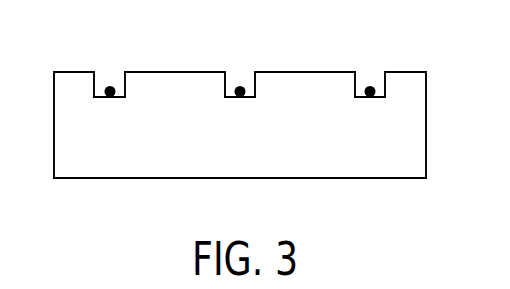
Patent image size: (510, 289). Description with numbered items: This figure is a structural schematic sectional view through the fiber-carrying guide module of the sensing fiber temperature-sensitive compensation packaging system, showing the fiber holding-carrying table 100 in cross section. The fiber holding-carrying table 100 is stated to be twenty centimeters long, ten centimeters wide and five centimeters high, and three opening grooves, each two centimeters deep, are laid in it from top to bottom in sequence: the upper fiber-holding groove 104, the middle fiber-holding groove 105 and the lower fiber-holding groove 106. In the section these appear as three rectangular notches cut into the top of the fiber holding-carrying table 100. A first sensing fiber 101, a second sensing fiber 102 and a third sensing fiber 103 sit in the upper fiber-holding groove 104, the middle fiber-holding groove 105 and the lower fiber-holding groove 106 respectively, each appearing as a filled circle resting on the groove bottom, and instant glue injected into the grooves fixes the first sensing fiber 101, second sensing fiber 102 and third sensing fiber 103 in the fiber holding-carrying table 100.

The fiber holding-carrying table 100 is at (157, 179).
The first sensing fiber 101 is at (107, 86).
The second sensing fiber 102 is at (237, 86).
The third sensing fiber 103 is at (372, 86).
The upper fiber-holding groove 104 is at (103, 98).
The middle fiber-holding groove 105 is at (233, 98).
The lower fiber-holding groove 106 is at (365, 98).